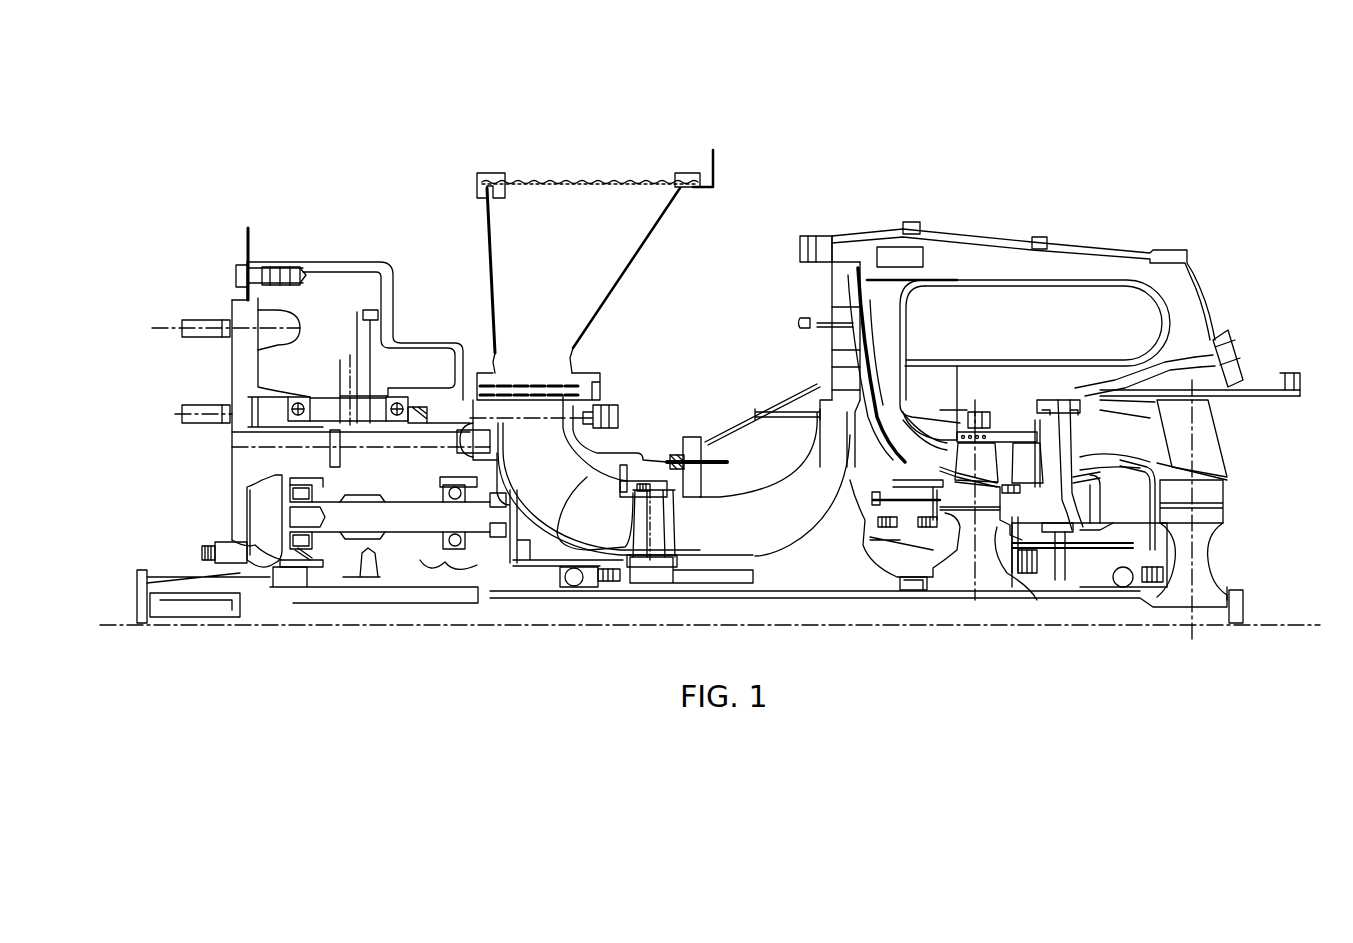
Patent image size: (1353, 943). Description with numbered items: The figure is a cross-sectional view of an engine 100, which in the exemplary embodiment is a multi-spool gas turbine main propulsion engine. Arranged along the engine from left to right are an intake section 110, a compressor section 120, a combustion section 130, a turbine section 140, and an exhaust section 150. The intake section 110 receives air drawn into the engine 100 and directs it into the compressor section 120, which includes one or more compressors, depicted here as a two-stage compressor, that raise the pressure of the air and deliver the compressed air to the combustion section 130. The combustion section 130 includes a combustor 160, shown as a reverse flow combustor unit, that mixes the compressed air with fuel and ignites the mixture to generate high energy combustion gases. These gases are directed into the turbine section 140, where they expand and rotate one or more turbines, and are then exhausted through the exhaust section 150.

The engine 100 is at (226, 152).
The intake section 110 is at (458, 311).
The compressor section 120 is at (765, 493).
The combustion section 130 is at (1007, 284).
The turbine section 140 is at (1007, 422).
The exhaust section 150 is at (1251, 434).
The combustor 160 is at (1100, 341).